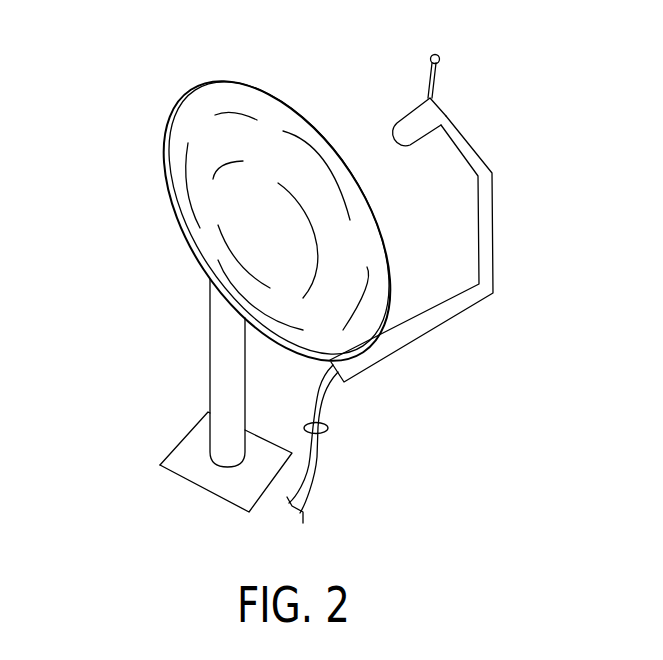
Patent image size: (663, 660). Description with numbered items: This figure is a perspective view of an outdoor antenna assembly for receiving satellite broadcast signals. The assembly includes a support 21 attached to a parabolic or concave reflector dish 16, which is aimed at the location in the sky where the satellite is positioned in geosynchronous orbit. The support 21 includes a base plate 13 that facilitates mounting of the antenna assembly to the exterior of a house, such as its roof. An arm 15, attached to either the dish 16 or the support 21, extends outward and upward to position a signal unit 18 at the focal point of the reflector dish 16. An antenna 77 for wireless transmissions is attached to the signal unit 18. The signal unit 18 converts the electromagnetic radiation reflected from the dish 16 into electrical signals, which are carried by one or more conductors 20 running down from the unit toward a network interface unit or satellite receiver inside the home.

The base plate 13 is at (183, 480).
The arm 15 is at (495, 243).
The reflector dish 16 is at (185, 93).
The signal unit 18 is at (405, 118).
The conductors 20 is at (329, 428).
The support 21 is at (209, 372).
The antenna 77 is at (438, 68).